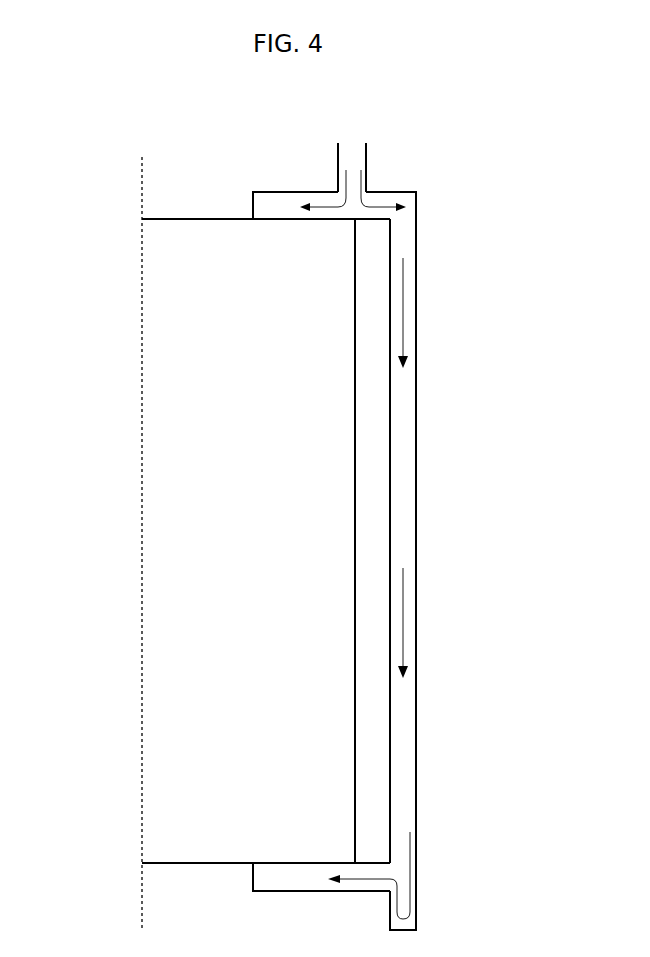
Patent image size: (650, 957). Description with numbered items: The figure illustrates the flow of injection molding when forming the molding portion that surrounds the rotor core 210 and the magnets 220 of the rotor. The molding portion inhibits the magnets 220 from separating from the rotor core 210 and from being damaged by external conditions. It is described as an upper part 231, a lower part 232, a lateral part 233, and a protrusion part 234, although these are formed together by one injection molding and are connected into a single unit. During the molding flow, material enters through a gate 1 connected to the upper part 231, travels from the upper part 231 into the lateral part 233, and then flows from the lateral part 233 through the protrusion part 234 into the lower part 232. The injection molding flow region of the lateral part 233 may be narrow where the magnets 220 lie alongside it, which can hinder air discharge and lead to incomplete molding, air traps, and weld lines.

The gate 1 is at (336, 155).
The rotor core 210 is at (183, 553).
The magnets 220 is at (372, 773).
The upper part 231 is at (408, 190).
The lower part 232 is at (286, 880).
The lateral part 233 is at (417, 460).
The protrusion part 234 is at (417, 915).